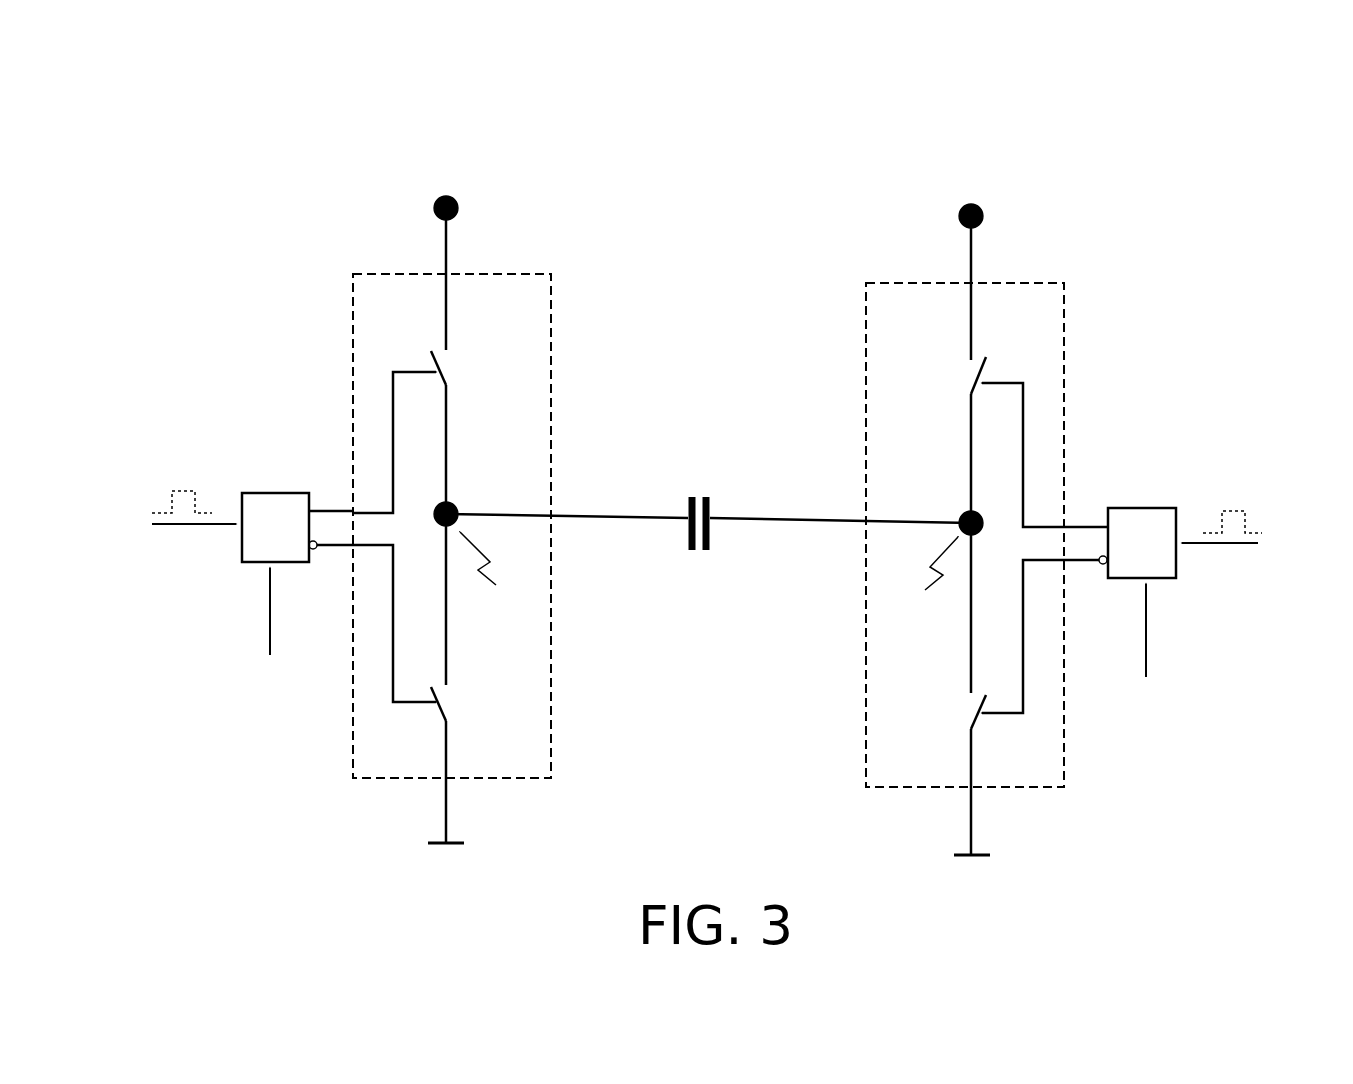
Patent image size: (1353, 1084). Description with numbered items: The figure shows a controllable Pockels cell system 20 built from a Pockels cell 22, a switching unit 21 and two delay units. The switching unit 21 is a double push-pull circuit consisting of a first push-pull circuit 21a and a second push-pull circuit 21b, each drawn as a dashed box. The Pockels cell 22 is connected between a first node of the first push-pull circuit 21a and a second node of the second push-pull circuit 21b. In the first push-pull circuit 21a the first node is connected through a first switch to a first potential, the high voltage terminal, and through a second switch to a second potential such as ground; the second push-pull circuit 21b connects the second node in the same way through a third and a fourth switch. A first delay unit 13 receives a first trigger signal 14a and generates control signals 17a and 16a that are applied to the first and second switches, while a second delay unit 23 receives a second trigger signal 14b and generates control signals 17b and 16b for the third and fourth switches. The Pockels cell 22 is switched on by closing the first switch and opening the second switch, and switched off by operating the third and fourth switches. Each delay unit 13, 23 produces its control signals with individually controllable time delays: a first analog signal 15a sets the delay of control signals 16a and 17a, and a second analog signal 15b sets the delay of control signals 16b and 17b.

The first delay unit 13 is at (297, 484).
The first trigger signal 14a is at (160, 514).
The second trigger signal 14b is at (1251, 534).
The first analog signal 15a is at (259, 632).
The second analog signal 15b is at (1146, 651).
The control signal 16a is at (430, 648).
The control signal 16b is at (979, 662).
The control signal 17a is at (428, 426).
The control signal 17b is at (979, 435).
The Pockels cell system 20 is at (703, 505).
The switching unit 21 is at (709, 530).
The first push-pull circuit 21a is at (361, 525).
The second push-pull circuit 21b is at (1056, 534).
The Pockels cell 22 is at (708, 597).
The second delay unit 23 is at (1120, 503).